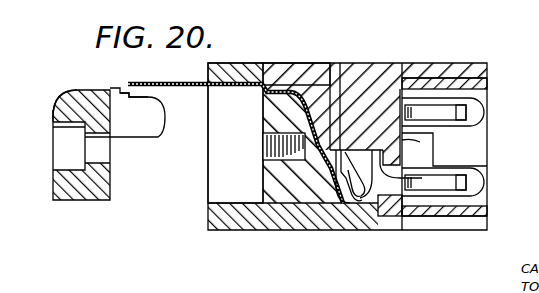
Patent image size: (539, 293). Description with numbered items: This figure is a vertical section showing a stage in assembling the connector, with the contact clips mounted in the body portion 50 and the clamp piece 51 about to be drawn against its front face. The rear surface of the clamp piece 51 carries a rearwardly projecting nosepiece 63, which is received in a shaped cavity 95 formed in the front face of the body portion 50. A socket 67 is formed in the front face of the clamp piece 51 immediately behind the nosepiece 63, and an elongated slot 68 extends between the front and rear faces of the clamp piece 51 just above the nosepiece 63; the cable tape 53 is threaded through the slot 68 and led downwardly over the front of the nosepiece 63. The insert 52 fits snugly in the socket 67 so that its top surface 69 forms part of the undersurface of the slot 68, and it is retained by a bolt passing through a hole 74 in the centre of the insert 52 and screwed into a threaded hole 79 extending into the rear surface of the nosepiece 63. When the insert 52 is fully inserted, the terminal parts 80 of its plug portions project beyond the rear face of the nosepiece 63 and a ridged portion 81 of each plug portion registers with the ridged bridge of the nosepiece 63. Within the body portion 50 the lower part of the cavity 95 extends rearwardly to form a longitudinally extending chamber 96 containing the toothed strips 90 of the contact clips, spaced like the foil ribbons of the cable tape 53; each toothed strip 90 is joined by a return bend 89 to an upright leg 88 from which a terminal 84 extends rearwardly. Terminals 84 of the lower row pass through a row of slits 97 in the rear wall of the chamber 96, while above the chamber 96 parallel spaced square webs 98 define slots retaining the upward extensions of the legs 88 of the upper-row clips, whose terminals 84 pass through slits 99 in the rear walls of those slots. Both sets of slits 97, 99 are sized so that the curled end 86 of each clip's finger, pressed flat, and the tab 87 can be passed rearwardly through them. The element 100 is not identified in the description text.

The body portion 50 is at (288, 67).
The clamp piece 51 is at (246, 215).
The insert 52 is at (80, 203).
The cable tape 53 is at (128, 83).
The nosepiece 63 is at (307, 193).
The socket 67 is at (254, 193).
The elongated slot 68 is at (256, 96).
The top surface 69 is at (77, 92).
The hole 74 is at (110, 152).
The threaded hole 79 is at (282, 68).
The terminal parts 80 is at (160, 133).
The ridged portion 81 is at (148, 94).
The terminal 84 is at (488, 155).
The curled end 86 is at (464, 114).
The tab 87 is at (426, 148).
The leg 88 is at (393, 160).
The return bend 89 is at (352, 225).
The toothed strip 90 is at (365, 198).
The cavity 95 is at (320, 72).
The chamber 96 is at (330, 215).
The slits 97 is at (402, 214).
The webs 98 is at (346, 92).
The slits 99 is at (398, 75).
The plug face 100 is at (54, 112).